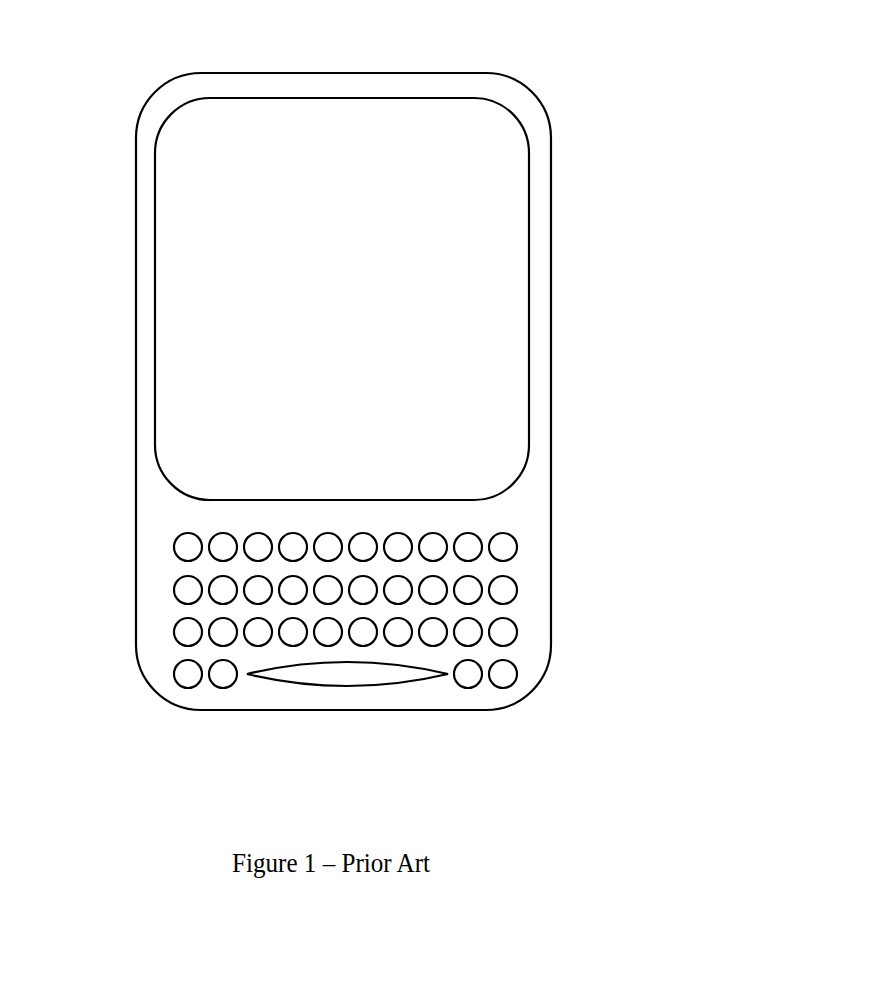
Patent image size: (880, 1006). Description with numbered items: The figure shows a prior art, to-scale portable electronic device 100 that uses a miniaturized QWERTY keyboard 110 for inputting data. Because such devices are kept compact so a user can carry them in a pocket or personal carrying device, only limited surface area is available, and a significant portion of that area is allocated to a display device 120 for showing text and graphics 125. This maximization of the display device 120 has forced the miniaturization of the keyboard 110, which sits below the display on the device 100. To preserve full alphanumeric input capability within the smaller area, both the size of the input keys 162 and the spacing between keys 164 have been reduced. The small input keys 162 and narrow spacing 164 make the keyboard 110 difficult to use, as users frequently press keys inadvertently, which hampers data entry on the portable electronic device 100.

The portable electronic device 100 is at (551, 303).
The miniaturized QWERTY keyboard 110 is at (397, 587).
The display device 120 is at (505, 218).
The text and graphics 125 is at (203, 137).
The input keys 162 is at (175, 542).
The spacing between keys 164 is at (180, 605).